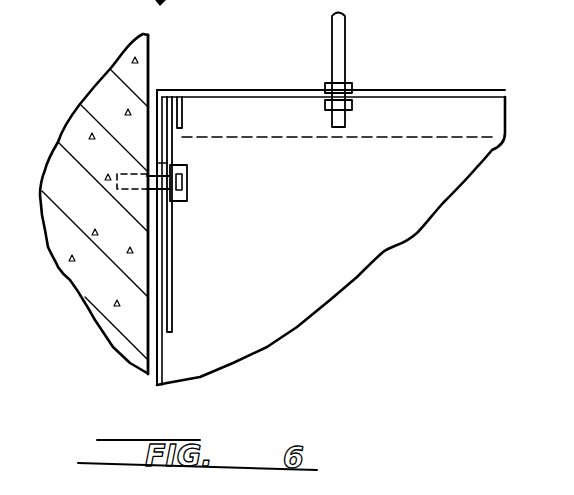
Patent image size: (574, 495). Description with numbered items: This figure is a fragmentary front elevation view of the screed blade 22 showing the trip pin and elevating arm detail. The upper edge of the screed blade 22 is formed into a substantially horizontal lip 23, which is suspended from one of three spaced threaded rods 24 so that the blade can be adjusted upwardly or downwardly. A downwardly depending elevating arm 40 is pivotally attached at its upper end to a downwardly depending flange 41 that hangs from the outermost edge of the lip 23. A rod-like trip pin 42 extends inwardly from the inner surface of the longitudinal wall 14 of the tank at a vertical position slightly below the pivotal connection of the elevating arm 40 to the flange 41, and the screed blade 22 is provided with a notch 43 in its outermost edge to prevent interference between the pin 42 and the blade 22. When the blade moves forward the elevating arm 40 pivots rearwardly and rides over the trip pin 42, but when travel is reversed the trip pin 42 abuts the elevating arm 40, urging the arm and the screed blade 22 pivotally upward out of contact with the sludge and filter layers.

The longitudinal wall 14 is at (84, 203).
The screed blade 22 is at (310, 266).
The horizontal lip 23 is at (204, 96).
The threaded rod 24 is at (332, 33).
The elevating arm 40 is at (168, 294).
The downwardly depending flange 41 is at (183, 119).
The trip pin 42 is at (181, 189).
The notch 43 is at (188, 171).